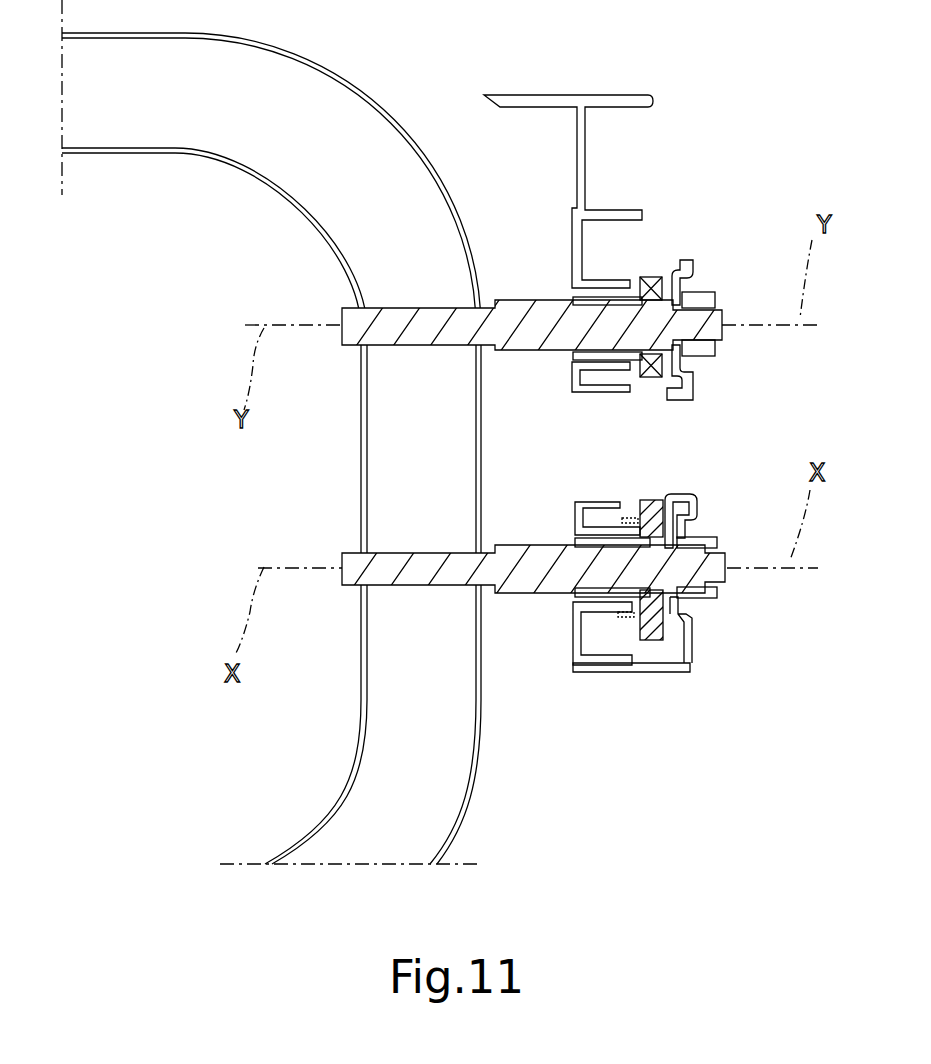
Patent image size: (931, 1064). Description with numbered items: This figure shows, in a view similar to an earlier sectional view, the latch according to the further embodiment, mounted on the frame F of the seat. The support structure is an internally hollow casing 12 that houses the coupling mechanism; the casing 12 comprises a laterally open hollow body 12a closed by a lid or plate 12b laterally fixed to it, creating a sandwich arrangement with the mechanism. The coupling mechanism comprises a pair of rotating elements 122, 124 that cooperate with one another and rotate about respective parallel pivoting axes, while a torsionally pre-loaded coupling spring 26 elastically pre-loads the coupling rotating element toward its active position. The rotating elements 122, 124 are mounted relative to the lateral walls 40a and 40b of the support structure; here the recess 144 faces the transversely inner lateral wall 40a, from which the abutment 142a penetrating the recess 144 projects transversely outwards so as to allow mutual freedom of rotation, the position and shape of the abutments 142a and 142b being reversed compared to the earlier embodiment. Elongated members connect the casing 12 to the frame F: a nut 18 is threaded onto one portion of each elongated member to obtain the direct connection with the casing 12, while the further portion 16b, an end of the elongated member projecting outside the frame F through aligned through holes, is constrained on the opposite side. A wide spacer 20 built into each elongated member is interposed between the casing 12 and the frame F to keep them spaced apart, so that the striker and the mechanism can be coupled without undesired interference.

The frame F is at (307, 97).
The casing 12 is at (617, 90).
The hollow body 12a is at (657, 680).
The lid or plate 12b is at (690, 252).
The further portion of the elongated member 16b is at (356, 332).
The nut 18 is at (714, 298).
The spacer 20 is at (523, 302).
The coupling spring 26 is at (631, 510).
The transversely inner lateral wall 40a is at (578, 392).
The lateral wall 40b is at (700, 380).
The rotating element 122 is at (690, 652).
The rotating element 124 is at (657, 275).
The abutment 142a is at (634, 277).
The abutment 142b is at (690, 278).
The recess 144 is at (628, 360).